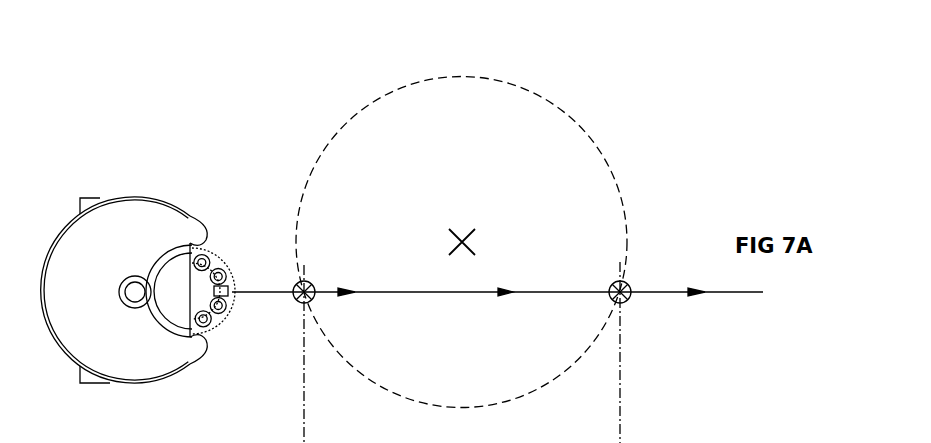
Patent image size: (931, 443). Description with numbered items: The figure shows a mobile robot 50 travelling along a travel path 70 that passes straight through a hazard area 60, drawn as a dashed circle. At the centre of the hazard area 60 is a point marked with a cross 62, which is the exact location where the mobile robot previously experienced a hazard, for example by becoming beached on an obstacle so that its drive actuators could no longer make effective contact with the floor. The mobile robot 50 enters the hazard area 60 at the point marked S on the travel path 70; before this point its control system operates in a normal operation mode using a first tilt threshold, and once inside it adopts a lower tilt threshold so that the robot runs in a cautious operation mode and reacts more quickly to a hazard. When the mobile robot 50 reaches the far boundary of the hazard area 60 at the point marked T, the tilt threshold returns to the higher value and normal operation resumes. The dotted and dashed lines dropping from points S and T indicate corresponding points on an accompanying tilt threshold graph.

The mobile robot 50 is at (117, 250).
The hazard area 60 is at (362, 113).
The point marked with a cross 62 is at (466, 231).
The travel path 70 is at (728, 292).
The entry point S is at (302, 306).
The exit point T is at (622, 306).